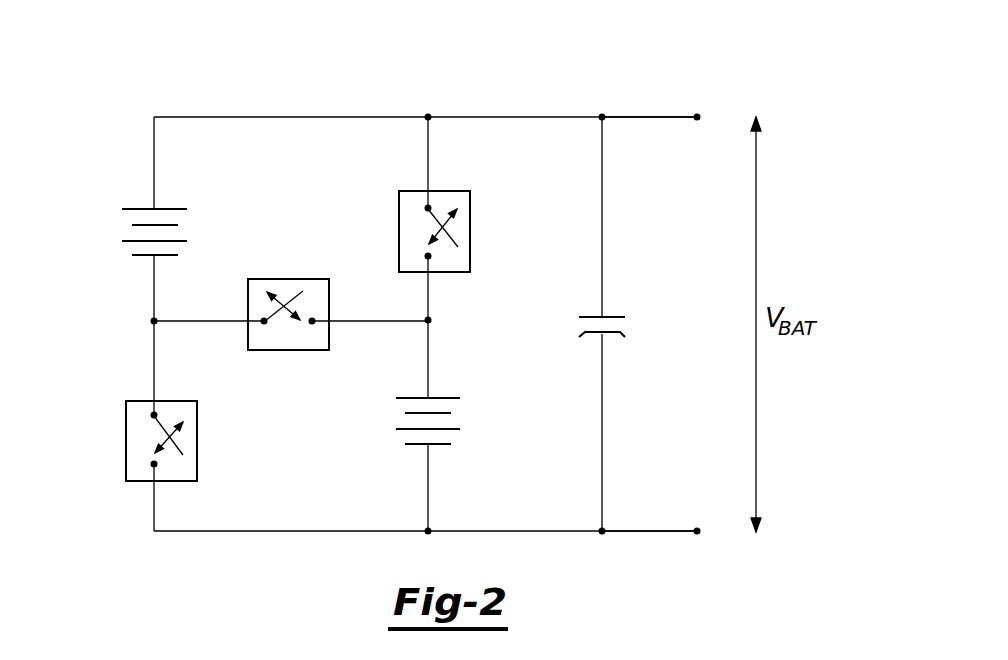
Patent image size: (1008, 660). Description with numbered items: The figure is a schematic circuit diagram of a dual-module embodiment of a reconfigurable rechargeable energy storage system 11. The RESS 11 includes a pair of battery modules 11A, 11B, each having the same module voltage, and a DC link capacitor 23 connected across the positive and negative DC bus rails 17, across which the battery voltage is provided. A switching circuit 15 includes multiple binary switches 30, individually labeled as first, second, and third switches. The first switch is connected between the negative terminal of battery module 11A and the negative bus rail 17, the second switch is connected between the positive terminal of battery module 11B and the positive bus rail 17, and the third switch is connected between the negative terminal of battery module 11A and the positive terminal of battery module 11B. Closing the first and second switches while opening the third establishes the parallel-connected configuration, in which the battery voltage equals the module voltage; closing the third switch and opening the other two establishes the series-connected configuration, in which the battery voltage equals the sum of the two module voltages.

The rechargeable energy storage system 11 is at (795, 70).
The battery module 11A is at (172, 200).
The battery module 11B is at (447, 388).
The switching circuit 15 is at (292, 427).
The DC bus rails 17 is at (667, 310).
The DC link capacitor 23 is at (640, 296).
The switches 30 is at (460, 185).